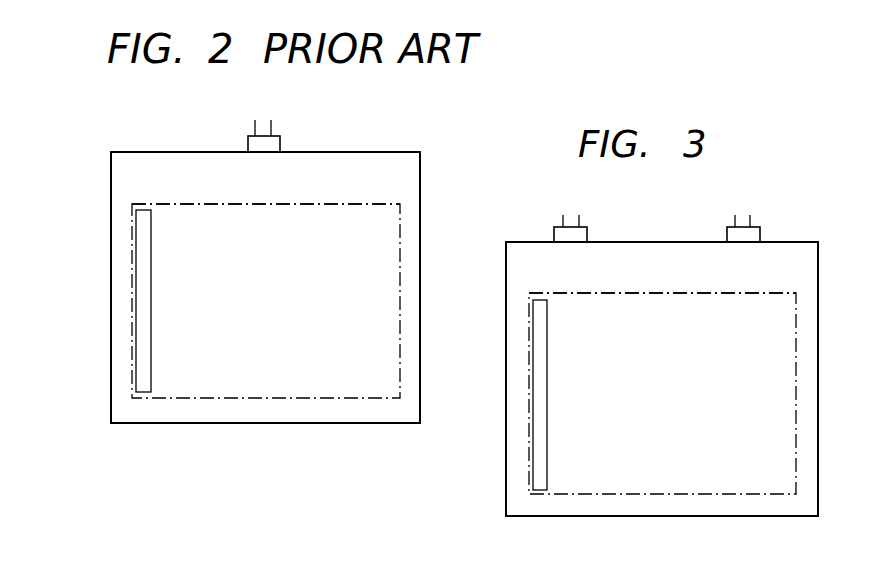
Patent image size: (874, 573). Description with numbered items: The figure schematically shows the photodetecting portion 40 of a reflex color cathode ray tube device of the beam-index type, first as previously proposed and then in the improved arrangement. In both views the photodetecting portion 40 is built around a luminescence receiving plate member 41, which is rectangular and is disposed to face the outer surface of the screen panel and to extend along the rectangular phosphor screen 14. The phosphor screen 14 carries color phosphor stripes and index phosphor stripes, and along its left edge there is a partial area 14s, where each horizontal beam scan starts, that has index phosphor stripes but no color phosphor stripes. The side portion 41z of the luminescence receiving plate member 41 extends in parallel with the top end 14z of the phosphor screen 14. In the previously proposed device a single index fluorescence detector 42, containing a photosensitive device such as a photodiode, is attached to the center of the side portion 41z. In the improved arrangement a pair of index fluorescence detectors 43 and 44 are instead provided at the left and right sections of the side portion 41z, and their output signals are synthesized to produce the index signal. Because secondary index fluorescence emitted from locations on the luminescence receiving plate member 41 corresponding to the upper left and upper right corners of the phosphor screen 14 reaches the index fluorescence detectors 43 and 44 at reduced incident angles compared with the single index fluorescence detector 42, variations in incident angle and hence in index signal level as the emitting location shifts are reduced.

In FIG. 2, the photodetecting portion 40 is at (292, 138).
In FIG. 3, the photodetecting portion 40 is at (773, 228).
In FIG. 2, the luminescence receiving plate member 41 is at (193, 423).
In FIG. 3, the luminescence receiving plate member 41 is at (556, 516).
In FIG. 2, the side portion of the luminescence receiving plate member 41z is at (178, 152).
In FIG. 3, the side portion of the luminescence receiving plate member 41z is at (675, 242).
In FIG. 2, the index fluorescence detector 42 is at (264, 144).
In FIG. 3, the index fluorescence detector 43 is at (571, 234).
In FIG. 3, the index fluorescence detector 44 is at (741, 234).
In FIG. 2, the phosphor screen 14 is at (293, 398).
In FIG. 3, the phosphor screen 14 is at (697, 494).
In FIG. 2, the top end of the phosphor screen 14z is at (293, 204).
In FIG. 3, the top end of the phosphor screen 14z is at (618, 293).
In FIG. 2, the partial area of the phosphor screen 14s is at (137, 380).
In FIG. 3, the partial area of the phosphor screen 14s is at (533, 463).